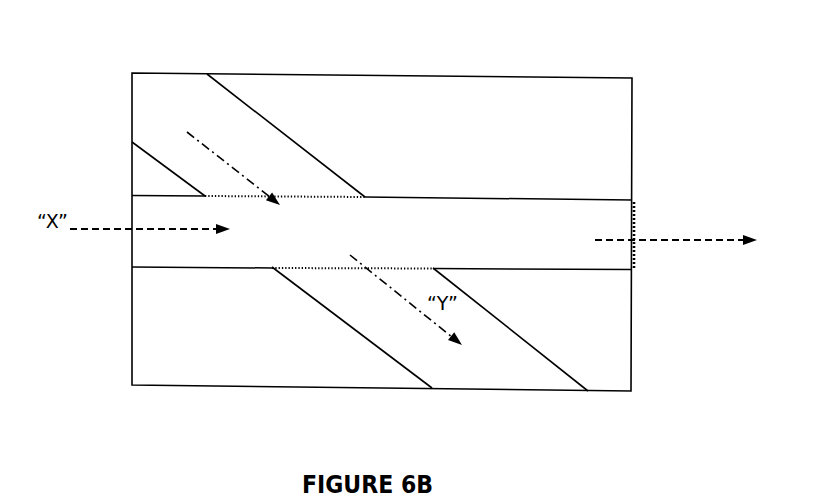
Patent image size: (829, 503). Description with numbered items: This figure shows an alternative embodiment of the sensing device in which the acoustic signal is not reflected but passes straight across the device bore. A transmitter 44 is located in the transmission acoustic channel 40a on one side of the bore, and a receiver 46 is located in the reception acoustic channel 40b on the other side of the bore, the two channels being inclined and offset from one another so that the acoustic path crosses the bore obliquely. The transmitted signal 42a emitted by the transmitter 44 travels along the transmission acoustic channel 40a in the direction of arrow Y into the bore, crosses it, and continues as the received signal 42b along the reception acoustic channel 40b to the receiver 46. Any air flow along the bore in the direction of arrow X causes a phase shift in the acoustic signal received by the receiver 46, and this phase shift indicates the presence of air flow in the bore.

The transmission acoustic channel 40a is at (250, 127).
The reception acoustic channel 40b is at (443, 382).
The transmitted signal 42a is at (235, 168).
The received signal 42b is at (406, 300).
The transmitter 44 is at (168, 140).
The receiver 46 is at (510, 329).